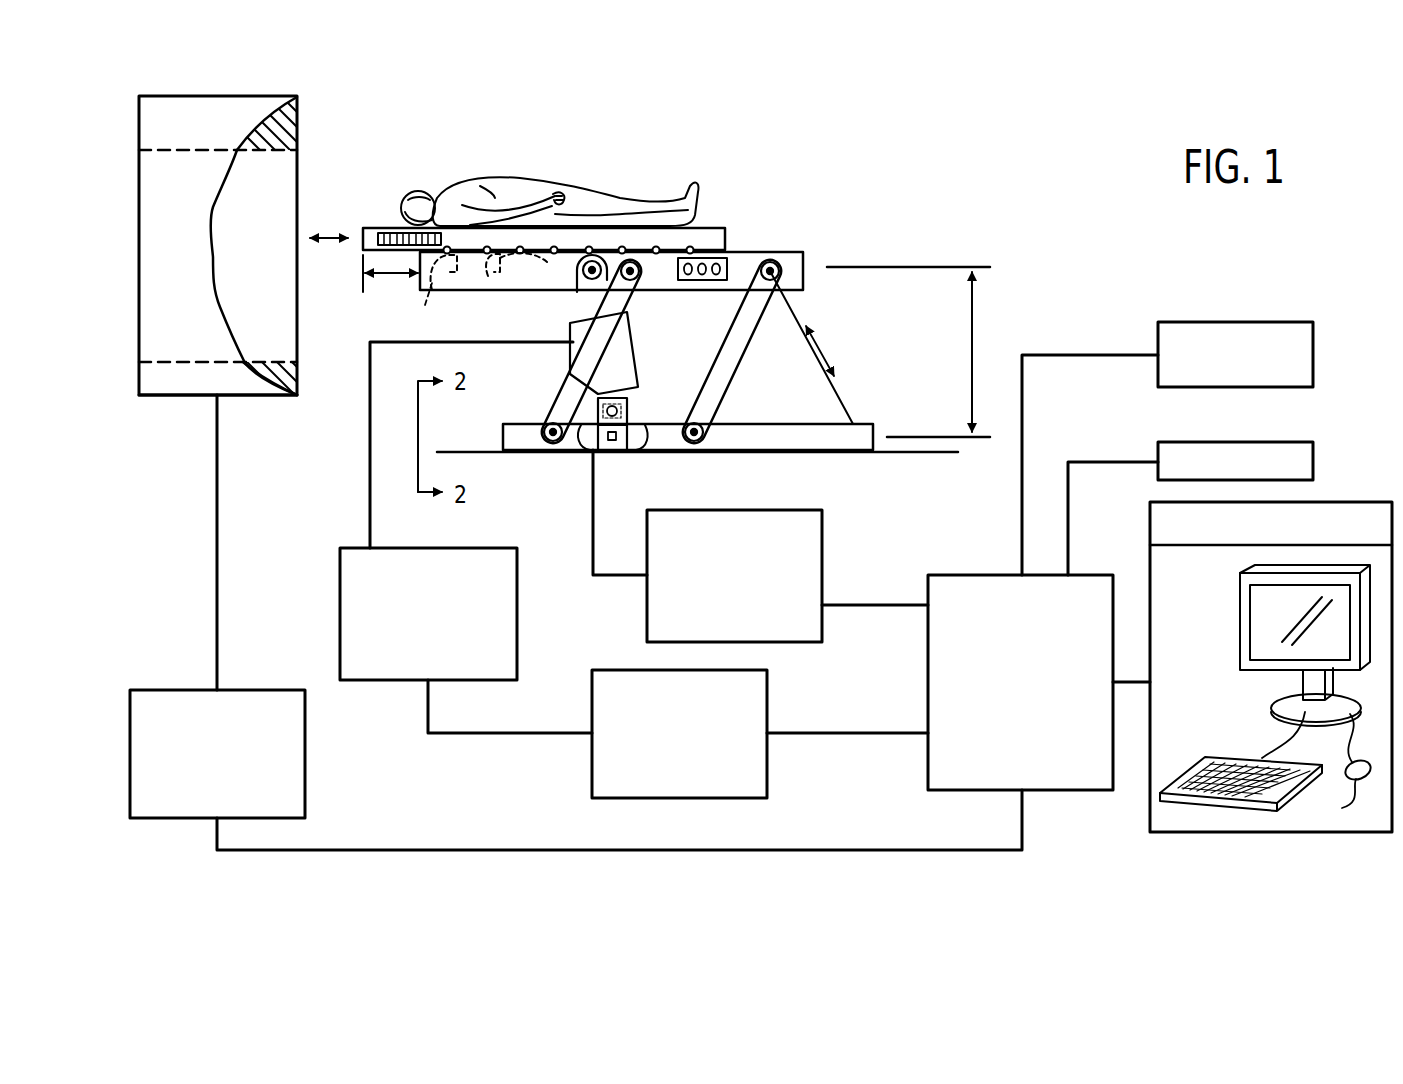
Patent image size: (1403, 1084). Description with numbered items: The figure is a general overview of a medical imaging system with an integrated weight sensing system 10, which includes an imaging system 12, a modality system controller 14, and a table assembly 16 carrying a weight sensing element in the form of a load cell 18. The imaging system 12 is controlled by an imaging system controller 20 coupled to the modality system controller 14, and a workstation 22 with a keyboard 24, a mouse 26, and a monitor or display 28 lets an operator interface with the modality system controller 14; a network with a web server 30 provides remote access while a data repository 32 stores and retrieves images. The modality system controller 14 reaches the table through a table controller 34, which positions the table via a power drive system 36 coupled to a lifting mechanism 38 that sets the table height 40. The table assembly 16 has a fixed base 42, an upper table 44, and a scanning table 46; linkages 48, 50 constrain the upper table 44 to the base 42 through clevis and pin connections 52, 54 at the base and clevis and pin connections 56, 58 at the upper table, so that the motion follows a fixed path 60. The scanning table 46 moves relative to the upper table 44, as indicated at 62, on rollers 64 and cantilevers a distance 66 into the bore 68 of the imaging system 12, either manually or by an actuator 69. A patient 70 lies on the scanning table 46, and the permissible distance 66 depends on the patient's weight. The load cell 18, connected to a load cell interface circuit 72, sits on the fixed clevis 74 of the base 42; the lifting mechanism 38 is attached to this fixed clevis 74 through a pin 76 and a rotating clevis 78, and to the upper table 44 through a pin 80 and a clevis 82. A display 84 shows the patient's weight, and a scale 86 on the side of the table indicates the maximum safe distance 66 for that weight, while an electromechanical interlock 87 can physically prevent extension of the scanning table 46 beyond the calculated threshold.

The medical imaging system with integrated weight sensing system 10 is at (948, 174).
The imaging system 12 is at (260, 396).
The modality system controller 14 is at (928, 682).
The table assembly 16 is at (767, 250).
The load cell 18 is at (610, 450).
The imaging system controller 20 is at (307, 752).
The workstation 22 is at (1270, 832).
The keyboard 24 is at (1218, 806).
The mouse 26 is at (1342, 769).
The monitor or display 28 is at (1240, 620).
The web server 30 is at (1247, 442).
The data repository 32 is at (1247, 322).
The table controller 34 is at (677, 800).
The power drive system 36 is at (340, 615).
The lifting mechanism 38 is at (570, 347).
The table height 40 is at (972, 348).
The base 42 is at (825, 452).
The upper table 44 is at (803, 267).
The scanning table 46 is at (710, 227).
The linkage 48 is at (756, 357).
The linkage 50 is at (637, 323).
The clevis and pin connection 52 is at (695, 445).
The clevis and pin connection 54 is at (549, 423).
The clevis and pin connection 56 is at (770, 283).
The clevis and pin connection 58 is at (636, 282).
The fixed path 60 is at (826, 350).
The scanning table movement 62 is at (327, 247).
The rollers 64 is at (446, 272).
The cantilever distance 66 is at (393, 280).
The bore 68 is at (298, 182).
The actuator 69 is at (526, 271).
The patient 70 is at (525, 180).
The load cell interface circuit 72 is at (647, 607).
The fixed clevis 74 is at (588, 443).
The pin 76 is at (630, 413).
The rotating clevis 78 is at (628, 397).
The pin 80 is at (661, 268).
The clevis 82 is at (578, 292).
The display 84 is at (727, 262).
The scale 86 is at (380, 227).
The electromechanical interlock 87 is at (428, 308).